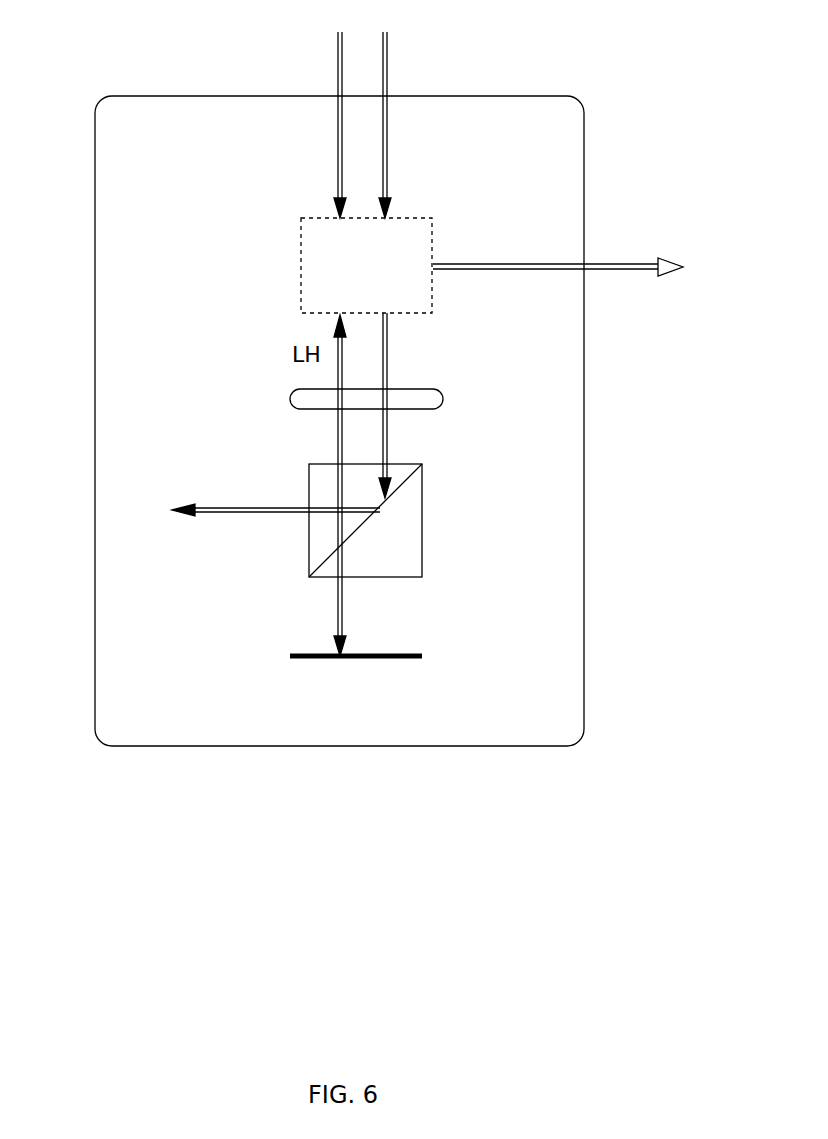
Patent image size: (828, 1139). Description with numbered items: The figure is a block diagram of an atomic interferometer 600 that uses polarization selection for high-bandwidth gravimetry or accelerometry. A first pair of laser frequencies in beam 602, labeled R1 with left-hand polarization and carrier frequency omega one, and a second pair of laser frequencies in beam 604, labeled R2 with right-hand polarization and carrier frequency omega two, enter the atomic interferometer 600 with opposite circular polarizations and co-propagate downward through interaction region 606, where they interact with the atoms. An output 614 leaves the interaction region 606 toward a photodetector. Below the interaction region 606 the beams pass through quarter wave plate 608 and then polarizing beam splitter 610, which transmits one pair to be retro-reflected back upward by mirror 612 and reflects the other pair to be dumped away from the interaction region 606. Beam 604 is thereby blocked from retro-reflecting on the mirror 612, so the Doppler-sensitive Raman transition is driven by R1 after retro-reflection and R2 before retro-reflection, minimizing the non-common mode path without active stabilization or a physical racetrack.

The atomic interferometer 600 is at (317, 388).
The beam 602 is at (288, 110).
The beam 604 is at (440, 110).
The interaction region 606 is at (316, 258).
The quarter wave plate 608 is at (350, 392).
The polarizing beam splitter 610 is at (356, 511).
The mirror 612 is at (349, 651).
The output to photodetector 614 is at (562, 270).